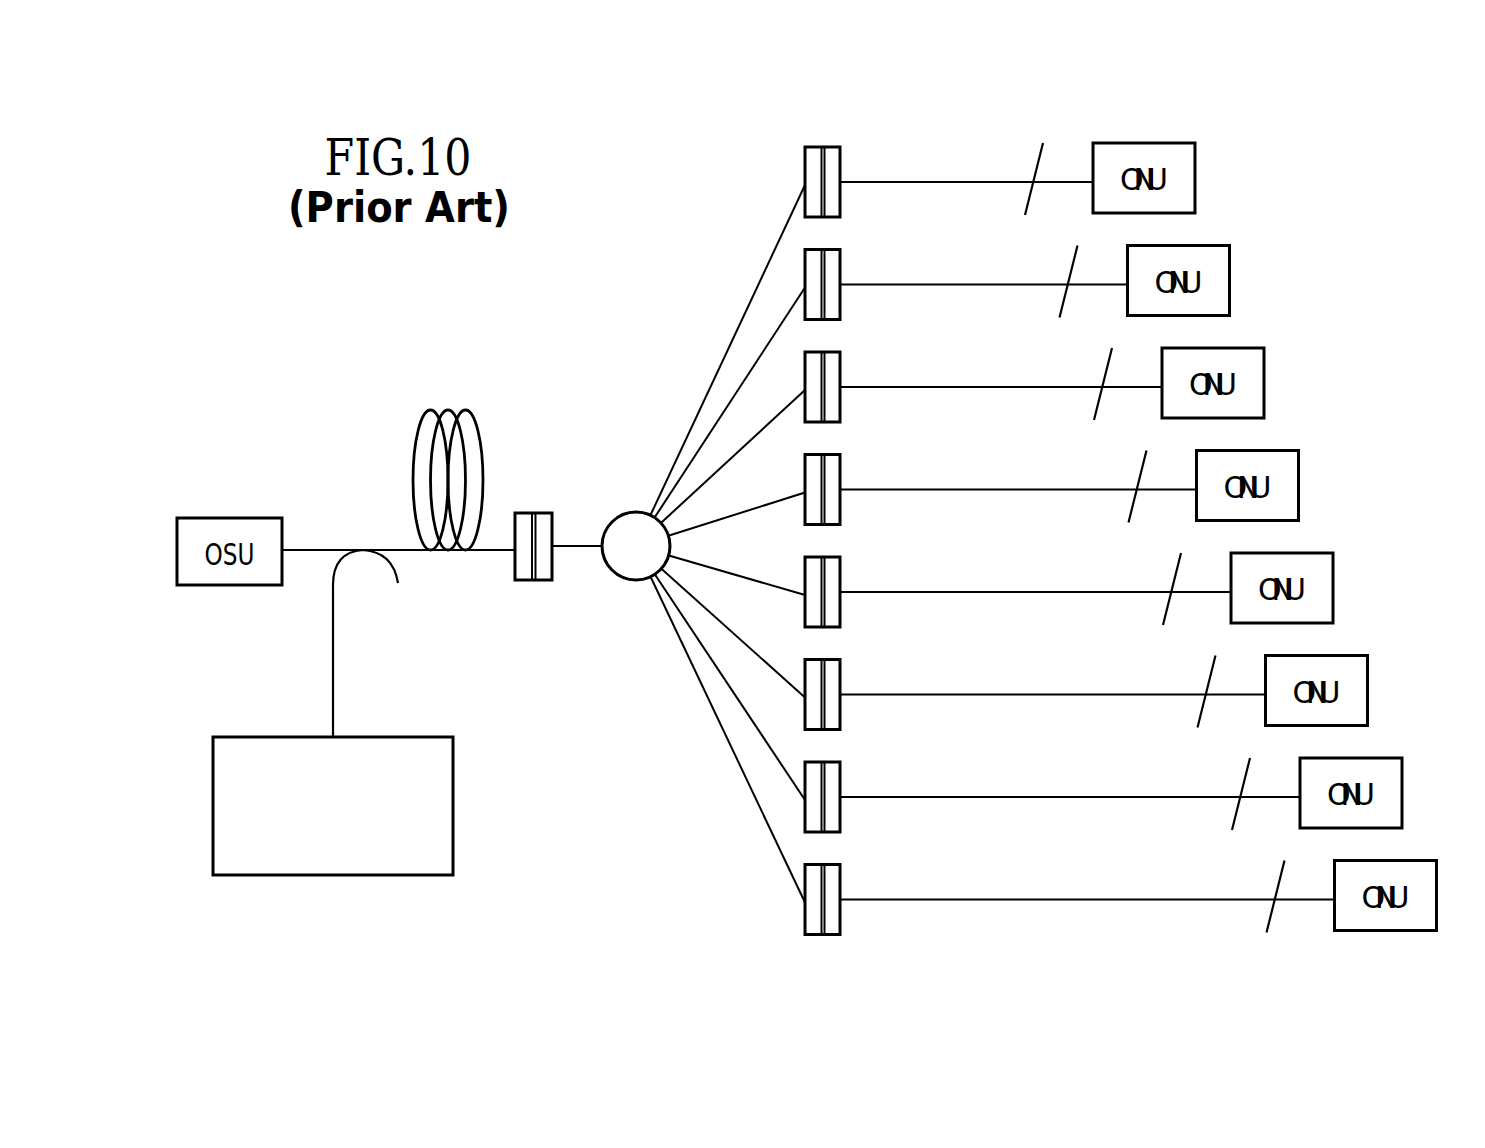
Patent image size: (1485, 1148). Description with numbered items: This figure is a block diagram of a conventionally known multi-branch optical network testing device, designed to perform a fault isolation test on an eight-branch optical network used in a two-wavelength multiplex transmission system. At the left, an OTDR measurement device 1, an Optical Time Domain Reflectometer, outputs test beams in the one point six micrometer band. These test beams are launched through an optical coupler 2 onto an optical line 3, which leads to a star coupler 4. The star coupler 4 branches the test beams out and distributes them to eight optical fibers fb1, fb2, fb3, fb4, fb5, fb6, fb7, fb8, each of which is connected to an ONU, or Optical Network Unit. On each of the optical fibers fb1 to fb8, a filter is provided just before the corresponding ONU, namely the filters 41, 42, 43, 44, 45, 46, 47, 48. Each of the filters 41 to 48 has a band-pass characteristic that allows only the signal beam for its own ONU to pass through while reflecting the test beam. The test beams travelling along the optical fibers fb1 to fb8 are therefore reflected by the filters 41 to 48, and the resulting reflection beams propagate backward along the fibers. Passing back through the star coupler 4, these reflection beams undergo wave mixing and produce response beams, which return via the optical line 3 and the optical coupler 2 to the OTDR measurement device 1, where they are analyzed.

The OTDR measurement device 1 is at (453, 781).
The optical coupler 2 is at (366, 553).
The optical line 3 is at (415, 456).
The star coupler 4 is at (617, 576).
The filter 41 is at (1041, 157).
The filter 42 is at (1073, 258).
The filter 43 is at (1108, 360).
The filter 44 is at (1142, 462).
The filter 45 is at (1176, 565).
The filter 46 is at (1211, 668).
The filter 47 is at (1246, 770).
The filter 48 is at (1280, 872).
The optical fiber fb1 is at (906, 182).
The optical fiber fb2 is at (906, 284).
The optical fiber fb3 is at (906, 387).
The optical fiber fb4 is at (906, 490).
The optical fiber fb5 is at (906, 592).
The optical fiber fb6 is at (906, 694).
The optical fiber fb7 is at (906, 797).
The optical fiber fb8 is at (906, 900).